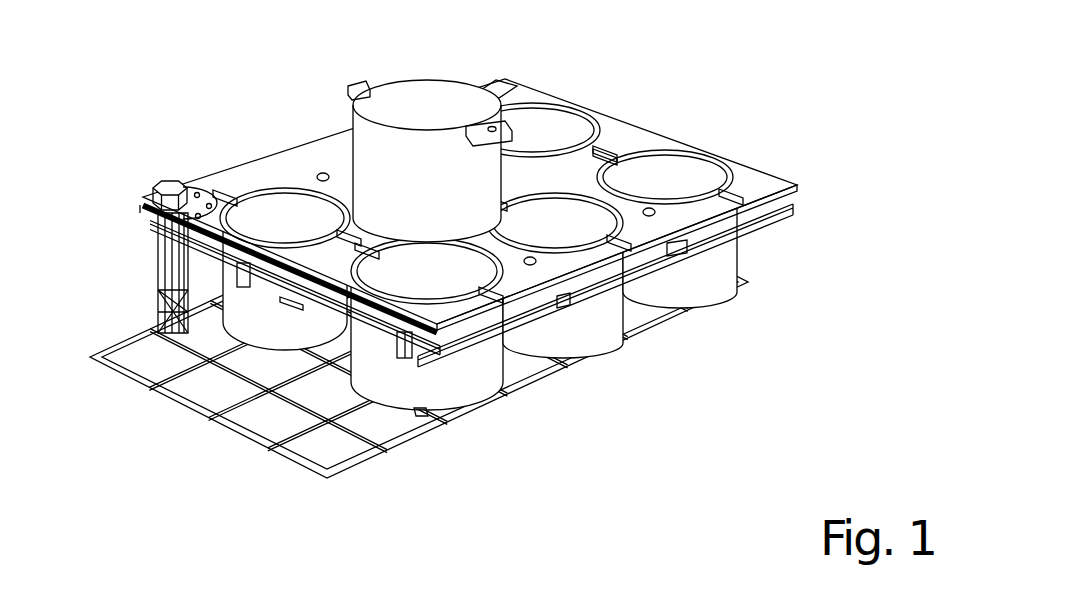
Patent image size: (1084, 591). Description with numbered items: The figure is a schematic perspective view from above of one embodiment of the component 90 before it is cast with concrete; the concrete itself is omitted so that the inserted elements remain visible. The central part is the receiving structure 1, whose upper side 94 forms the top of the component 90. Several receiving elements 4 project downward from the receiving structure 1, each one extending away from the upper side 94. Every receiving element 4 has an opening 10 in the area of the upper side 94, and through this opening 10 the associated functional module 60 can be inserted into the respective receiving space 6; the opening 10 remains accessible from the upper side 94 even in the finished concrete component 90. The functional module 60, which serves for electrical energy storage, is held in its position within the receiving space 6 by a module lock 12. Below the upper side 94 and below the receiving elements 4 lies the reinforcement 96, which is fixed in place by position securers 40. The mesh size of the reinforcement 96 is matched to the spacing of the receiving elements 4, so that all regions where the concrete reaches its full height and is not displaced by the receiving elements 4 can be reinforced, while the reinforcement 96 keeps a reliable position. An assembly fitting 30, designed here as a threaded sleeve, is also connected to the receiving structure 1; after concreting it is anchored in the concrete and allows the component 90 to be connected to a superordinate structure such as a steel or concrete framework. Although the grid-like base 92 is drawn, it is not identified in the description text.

The receiving structure 1 is at (475, 170).
The receiving element 4 is at (597, 317).
The receiving space 6 is at (268, 225).
The opening 10 is at (675, 170).
The module lock 12 is at (357, 82).
The assembly fitting 30 is at (158, 283).
The position securer 40 is at (423, 413).
The functional module 60 is at (390, 125).
The component 90 is at (452, 254).
The grid base 92 is at (273, 418).
The upper side 94 is at (475, 192).
The reinforcement 96 is at (740, 222).